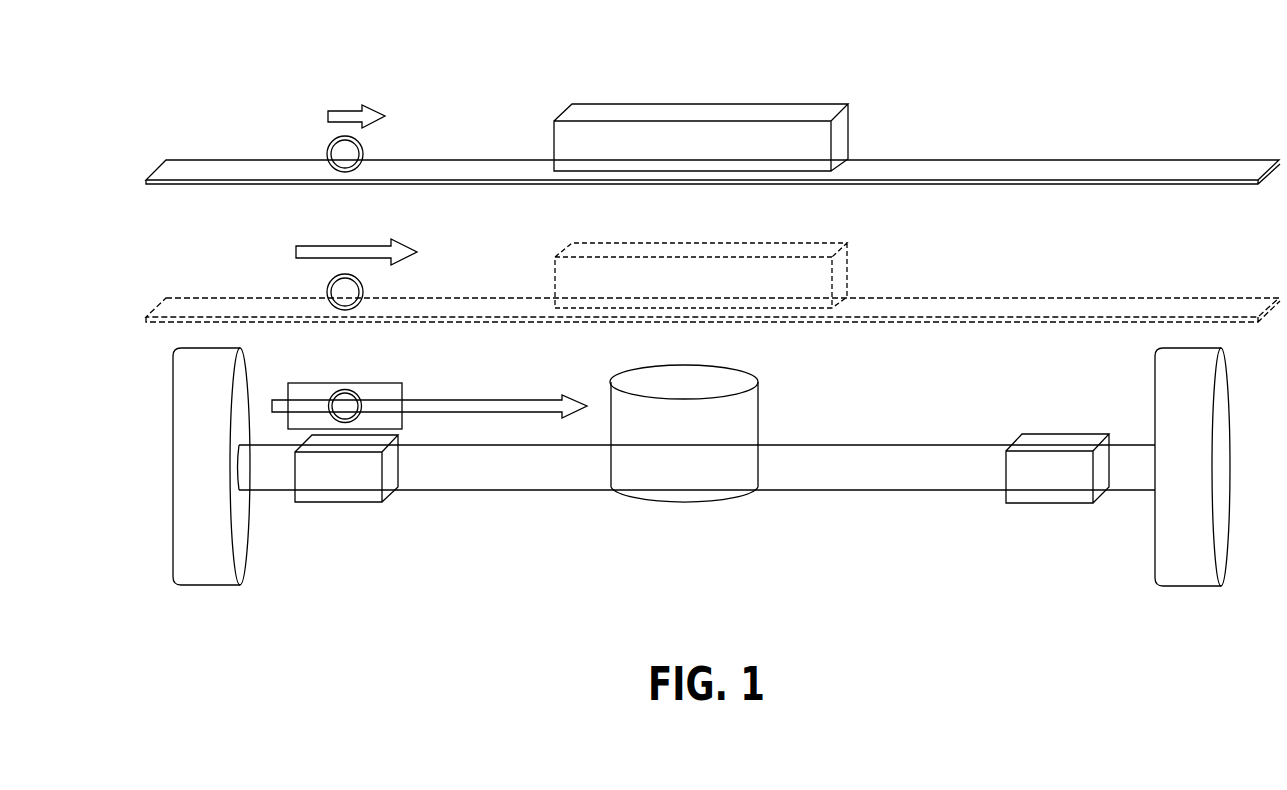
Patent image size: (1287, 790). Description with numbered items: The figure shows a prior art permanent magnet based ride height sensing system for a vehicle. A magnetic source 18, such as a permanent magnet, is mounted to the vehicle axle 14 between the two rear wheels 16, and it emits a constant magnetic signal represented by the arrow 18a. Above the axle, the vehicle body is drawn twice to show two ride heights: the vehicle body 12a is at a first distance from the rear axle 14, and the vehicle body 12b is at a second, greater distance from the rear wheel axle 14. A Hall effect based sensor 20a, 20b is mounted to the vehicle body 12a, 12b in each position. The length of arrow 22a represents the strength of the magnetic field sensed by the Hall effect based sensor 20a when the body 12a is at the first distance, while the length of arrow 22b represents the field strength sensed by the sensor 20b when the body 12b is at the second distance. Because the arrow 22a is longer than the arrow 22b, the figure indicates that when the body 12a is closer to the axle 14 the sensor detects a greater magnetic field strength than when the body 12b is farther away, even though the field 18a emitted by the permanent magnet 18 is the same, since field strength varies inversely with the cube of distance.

The vehicle body 12a is at (157, 310).
The vehicle body 12b is at (157, 172).
The vehicle axle 14 is at (908, 491).
The rear wheels 16 is at (173, 502).
The magnetic source 18 is at (350, 384).
The magnetic signal arrow 18a is at (477, 400).
The Hall effect based sensor 20a is at (327, 288).
The Hall effect based sensor 20b is at (327, 150).
The sensed magnetic field strength arrow 22a is at (393, 242).
The sensed magnetic field strength arrow 22b is at (374, 110).